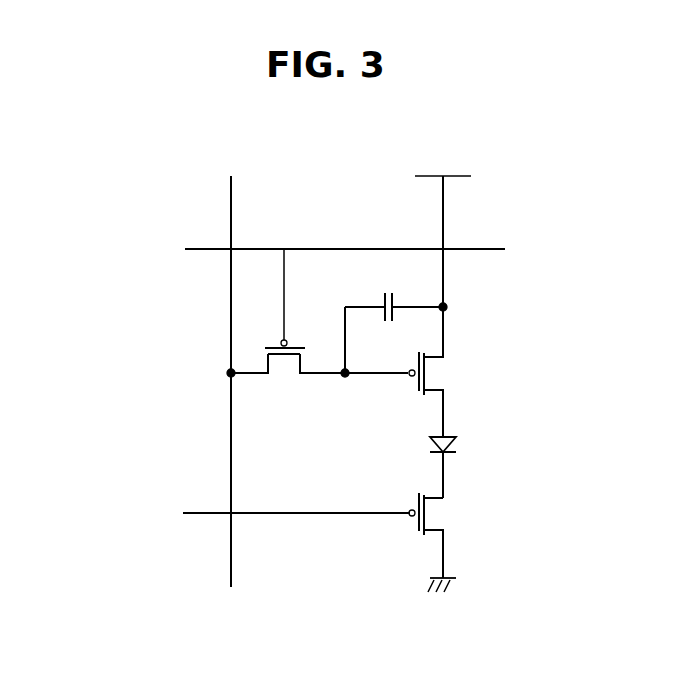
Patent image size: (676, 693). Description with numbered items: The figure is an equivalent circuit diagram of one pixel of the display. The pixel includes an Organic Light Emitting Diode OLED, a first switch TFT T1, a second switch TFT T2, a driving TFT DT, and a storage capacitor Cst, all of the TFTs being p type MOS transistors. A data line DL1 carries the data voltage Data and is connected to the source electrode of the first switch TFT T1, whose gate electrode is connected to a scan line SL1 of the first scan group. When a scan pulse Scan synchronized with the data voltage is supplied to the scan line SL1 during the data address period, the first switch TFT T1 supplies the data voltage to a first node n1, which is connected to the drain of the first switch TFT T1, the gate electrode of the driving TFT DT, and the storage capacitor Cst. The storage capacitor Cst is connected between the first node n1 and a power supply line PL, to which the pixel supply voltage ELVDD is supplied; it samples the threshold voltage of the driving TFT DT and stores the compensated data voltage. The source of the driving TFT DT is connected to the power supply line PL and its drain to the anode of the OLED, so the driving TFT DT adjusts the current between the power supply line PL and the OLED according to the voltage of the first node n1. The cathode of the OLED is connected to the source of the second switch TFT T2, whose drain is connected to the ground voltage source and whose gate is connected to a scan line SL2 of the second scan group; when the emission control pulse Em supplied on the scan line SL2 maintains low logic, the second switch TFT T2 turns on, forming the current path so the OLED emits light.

The data voltage Data is at (232, 165).
The data line DL1 is at (231, 210).
The pixel supply voltage ELVDD is at (446, 165).
The power supply line PL is at (443, 213).
The scan pulse Scan is at (157, 248).
The scan line of the first scan group SL1 is at (207, 252).
The emission control pulse Em is at (165, 513).
The scan line of the second scan group SL2 is at (207, 515).
The first switch TFT T1 is at (286, 322).
The first node n1 is at (345, 378).
The storage capacitor Cst is at (396, 296).
The driving TFT DT is at (440, 372).
The Organic Light Emitting Diode OLED is at (471, 467).
The second switch TFT T2 is at (439, 542).